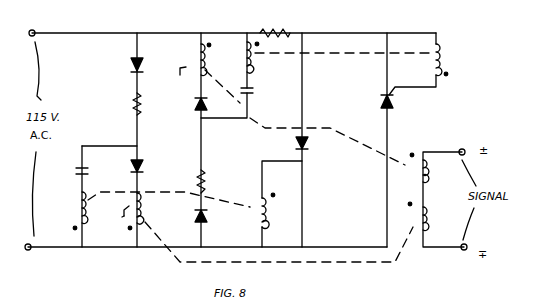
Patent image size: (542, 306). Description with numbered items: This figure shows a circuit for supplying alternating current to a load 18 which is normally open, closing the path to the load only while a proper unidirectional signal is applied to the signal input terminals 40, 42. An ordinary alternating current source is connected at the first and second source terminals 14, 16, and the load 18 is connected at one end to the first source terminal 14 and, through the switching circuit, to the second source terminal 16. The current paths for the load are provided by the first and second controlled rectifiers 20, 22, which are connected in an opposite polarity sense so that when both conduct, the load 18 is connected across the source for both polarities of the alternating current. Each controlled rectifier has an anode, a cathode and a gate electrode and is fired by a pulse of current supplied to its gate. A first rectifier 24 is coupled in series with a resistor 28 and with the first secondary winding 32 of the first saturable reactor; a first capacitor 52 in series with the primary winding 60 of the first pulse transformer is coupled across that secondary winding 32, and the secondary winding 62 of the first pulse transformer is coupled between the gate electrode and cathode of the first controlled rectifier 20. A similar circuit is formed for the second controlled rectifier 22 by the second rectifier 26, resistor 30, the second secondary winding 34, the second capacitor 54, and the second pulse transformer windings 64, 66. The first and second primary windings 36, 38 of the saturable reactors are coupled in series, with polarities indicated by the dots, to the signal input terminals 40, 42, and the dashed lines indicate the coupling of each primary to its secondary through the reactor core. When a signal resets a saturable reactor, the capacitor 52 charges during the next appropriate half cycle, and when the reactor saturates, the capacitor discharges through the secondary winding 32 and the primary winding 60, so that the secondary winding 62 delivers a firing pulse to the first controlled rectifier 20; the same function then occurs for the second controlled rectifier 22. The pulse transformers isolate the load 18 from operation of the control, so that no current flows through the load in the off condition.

The first source terminal 14 is at (32, 30).
The second source terminal 16 is at (29, 250).
The load 18 is at (294, 22).
The first controlled rectifier 20 is at (294, 142).
The second controlled rectifier 22 is at (378, 103).
The first rectifier 24 is at (128, 64).
The second rectifier 26 is at (205, 218).
The resistor 28 is at (128, 101).
The resistor 30 is at (196, 172).
The first secondary winding 32 is at (143, 211).
The second secondary winding 34 is at (196, 62).
The first primary winding 36 is at (428, 216).
The second primary winding 38 is at (428, 173).
The signal input terminal 40 is at (461, 149).
The signal input terminal 42 is at (464, 250).
The first capacitor 52 is at (95, 171).
The second capacitor 54 is at (252, 96).
The primary winding 60 is at (76, 210).
The secondary winding 62 is at (268, 216).
The primary winding 64 is at (252, 66).
The secondary winding 66 is at (446, 58).